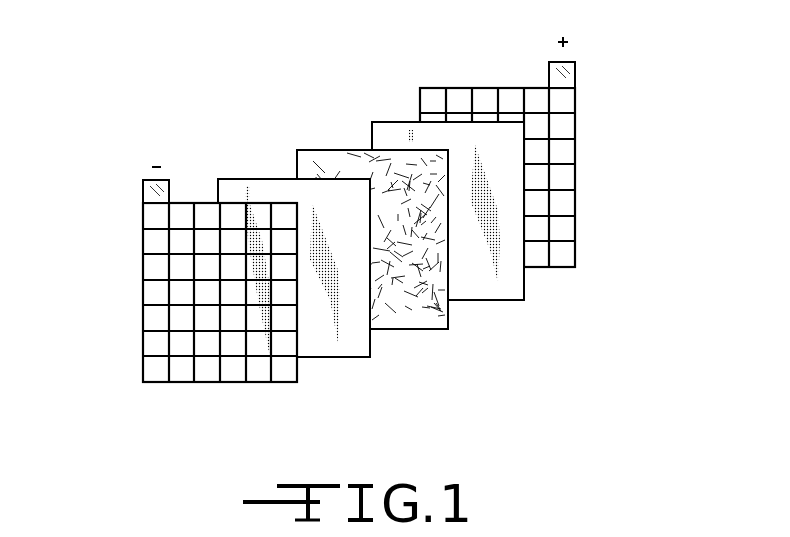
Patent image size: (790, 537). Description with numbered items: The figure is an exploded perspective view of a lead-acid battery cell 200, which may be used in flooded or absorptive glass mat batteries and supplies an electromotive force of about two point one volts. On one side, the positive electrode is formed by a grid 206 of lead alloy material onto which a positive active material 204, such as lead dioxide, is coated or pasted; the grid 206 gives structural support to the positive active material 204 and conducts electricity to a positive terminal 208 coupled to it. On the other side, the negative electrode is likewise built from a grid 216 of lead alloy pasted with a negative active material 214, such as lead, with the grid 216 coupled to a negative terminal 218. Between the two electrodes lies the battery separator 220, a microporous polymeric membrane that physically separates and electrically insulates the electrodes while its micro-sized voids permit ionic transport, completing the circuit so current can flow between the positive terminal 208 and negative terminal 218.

The lead-acid battery cell 200 is at (381, 239).
The positive active material 204 is at (525, 293).
The grid 206 is at (575, 225).
The positive terminal 208 is at (542, 72).
The negative active material 214 is at (333, 357).
The grid 216 is at (200, 383).
The negative terminal 218 is at (140, 193).
The battery separator 220 is at (412, 330).